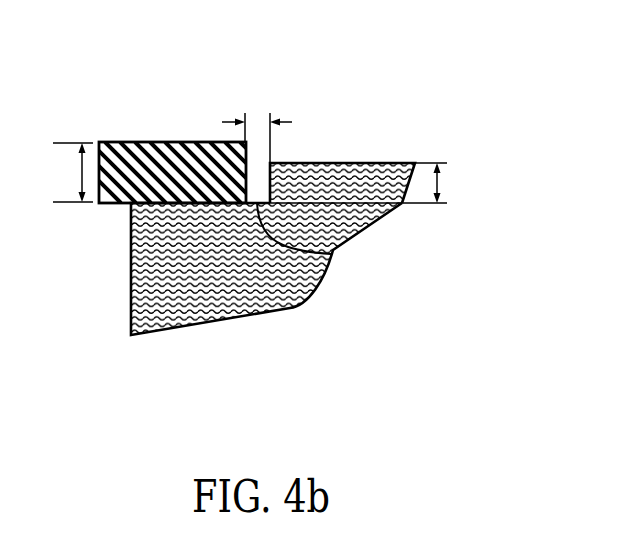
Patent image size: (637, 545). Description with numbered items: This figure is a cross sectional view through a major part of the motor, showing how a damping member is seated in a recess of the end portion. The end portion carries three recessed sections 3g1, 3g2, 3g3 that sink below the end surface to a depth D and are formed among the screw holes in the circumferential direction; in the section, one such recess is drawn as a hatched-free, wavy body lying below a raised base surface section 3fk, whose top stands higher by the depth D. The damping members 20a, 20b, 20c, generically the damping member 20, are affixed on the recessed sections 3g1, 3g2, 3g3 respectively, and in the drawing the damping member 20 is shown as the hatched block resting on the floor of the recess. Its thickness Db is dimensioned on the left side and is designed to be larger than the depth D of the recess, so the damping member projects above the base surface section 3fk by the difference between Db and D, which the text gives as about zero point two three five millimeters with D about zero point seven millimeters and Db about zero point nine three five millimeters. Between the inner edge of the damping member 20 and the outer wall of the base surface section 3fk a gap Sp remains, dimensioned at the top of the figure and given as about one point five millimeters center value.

The damping member 20 is at (179, 109).
The damping member 20c is at (179, 124).
The damping member 20a is at (180, 172).
The damping member 20b is at (164, 158).
The base surface section 3fk is at (343, 163).
The recessed section 3g3 is at (305, 254).
The recessed section 3g1 is at (273, 249).
The recessed section 3g2 is at (392, 308).
The thickness of the damping member Db is at (66, 172).
The gap Sp is at (257, 122).
The depth of the recessed section D is at (371, 183).